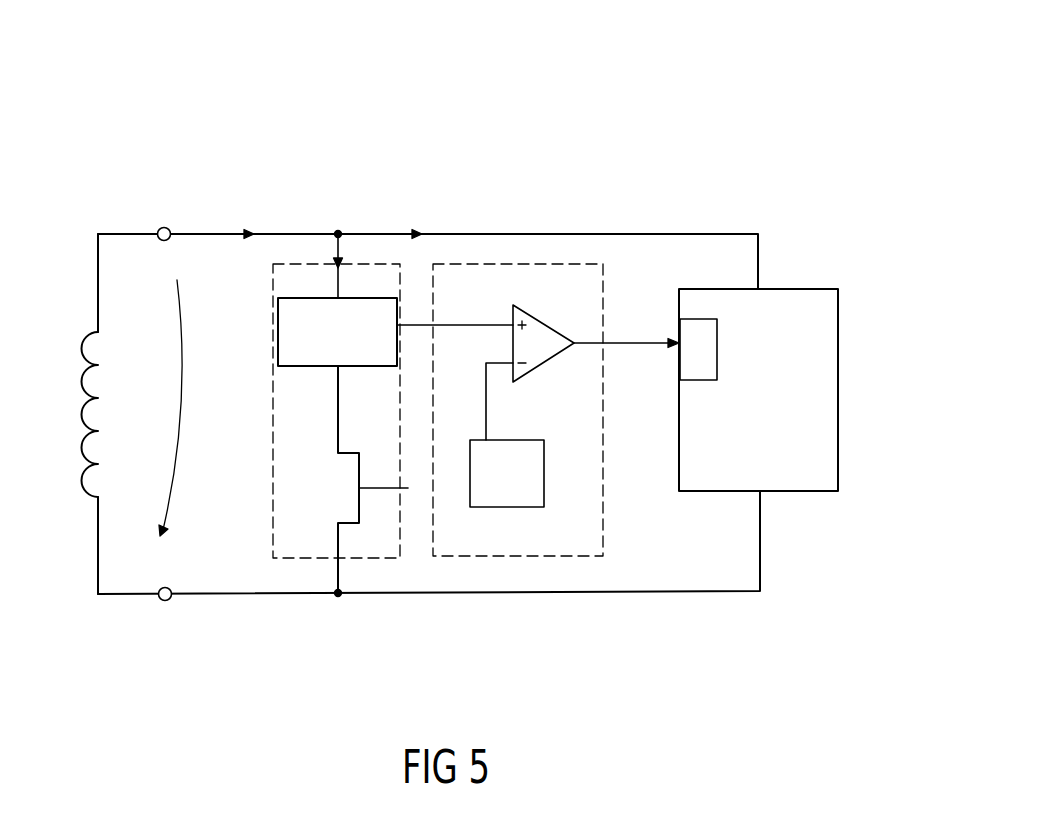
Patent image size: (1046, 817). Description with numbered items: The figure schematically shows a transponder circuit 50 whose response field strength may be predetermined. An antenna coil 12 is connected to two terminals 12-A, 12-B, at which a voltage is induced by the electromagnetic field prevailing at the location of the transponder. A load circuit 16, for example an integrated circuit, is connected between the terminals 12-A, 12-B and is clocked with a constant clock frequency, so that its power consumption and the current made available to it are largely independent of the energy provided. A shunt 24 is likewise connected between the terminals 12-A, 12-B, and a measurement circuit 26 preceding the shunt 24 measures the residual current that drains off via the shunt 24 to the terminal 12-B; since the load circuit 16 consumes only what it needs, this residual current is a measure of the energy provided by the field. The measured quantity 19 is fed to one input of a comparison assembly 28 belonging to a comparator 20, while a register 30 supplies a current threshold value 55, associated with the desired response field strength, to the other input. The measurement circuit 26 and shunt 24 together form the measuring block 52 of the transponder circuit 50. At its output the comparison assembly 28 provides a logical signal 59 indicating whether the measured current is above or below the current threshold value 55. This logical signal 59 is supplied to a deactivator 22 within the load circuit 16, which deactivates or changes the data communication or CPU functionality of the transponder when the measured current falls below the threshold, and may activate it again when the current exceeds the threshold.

The transponder circuit 50 is at (768, 67).
The antenna coil 12 is at (83, 484).
The terminal 12-A is at (164, 227).
The terminal 12-B is at (166, 601).
The measurement circuit 26 is at (309, 297).
The current measuring block 52 is at (357, 262).
The shunt 24 is at (333, 507).
The quantity 19 is at (411, 323).
The comparison assembly 28 is at (531, 311).
The current threshold value 55 is at (487, 408).
The register 30 is at (470, 455).
The comparator 20 is at (505, 558).
The logical signal 59 is at (633, 340).
The load circuit 16 is at (839, 392).
The deactivator 22 is at (700, 381).